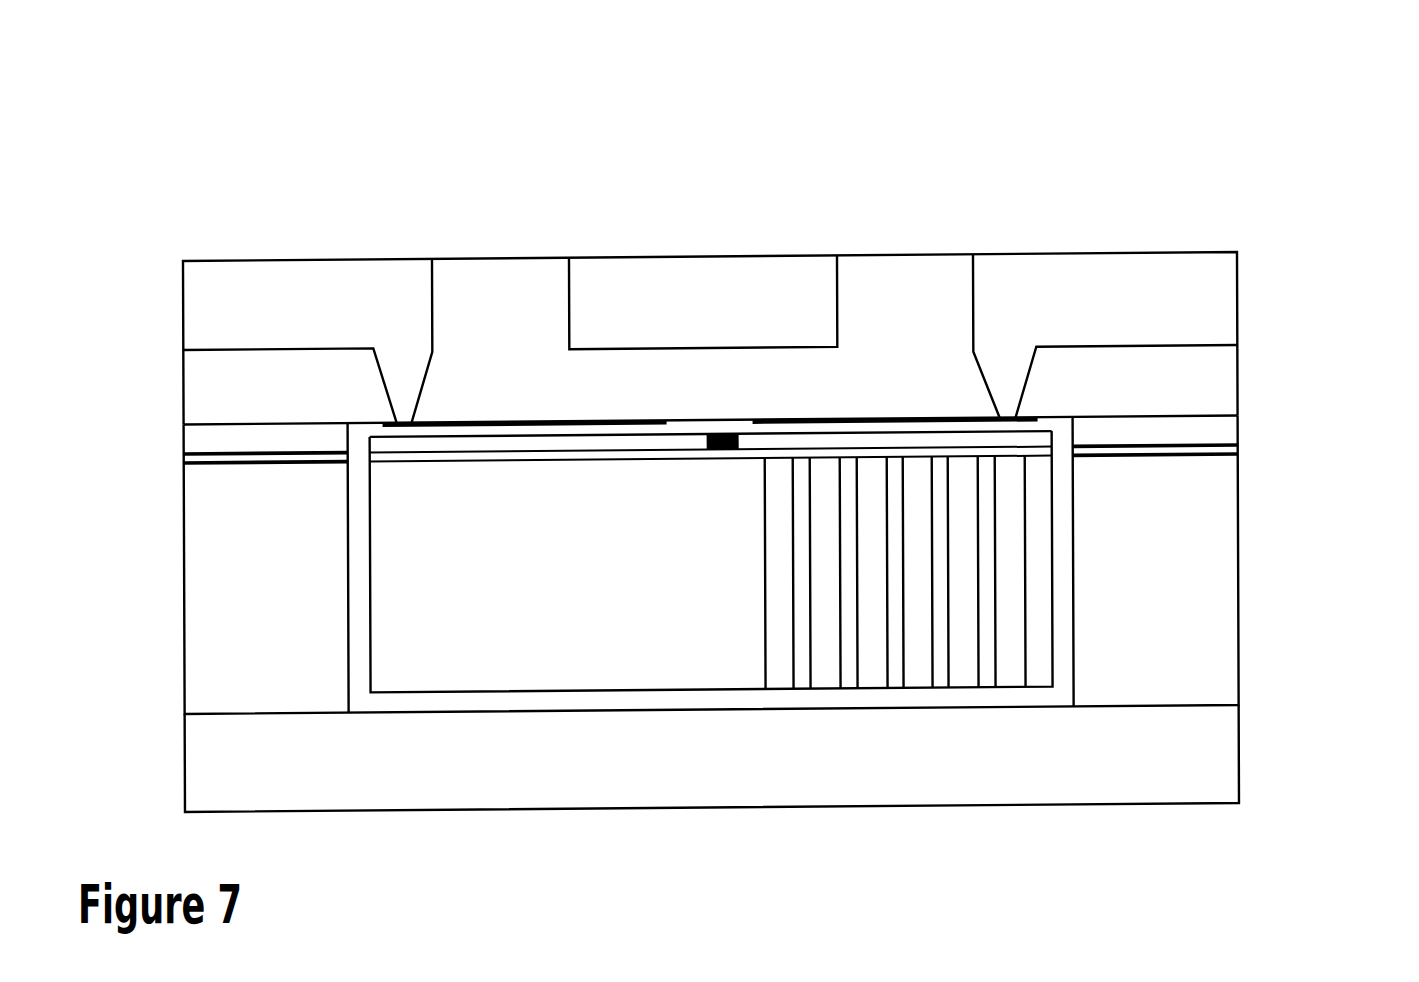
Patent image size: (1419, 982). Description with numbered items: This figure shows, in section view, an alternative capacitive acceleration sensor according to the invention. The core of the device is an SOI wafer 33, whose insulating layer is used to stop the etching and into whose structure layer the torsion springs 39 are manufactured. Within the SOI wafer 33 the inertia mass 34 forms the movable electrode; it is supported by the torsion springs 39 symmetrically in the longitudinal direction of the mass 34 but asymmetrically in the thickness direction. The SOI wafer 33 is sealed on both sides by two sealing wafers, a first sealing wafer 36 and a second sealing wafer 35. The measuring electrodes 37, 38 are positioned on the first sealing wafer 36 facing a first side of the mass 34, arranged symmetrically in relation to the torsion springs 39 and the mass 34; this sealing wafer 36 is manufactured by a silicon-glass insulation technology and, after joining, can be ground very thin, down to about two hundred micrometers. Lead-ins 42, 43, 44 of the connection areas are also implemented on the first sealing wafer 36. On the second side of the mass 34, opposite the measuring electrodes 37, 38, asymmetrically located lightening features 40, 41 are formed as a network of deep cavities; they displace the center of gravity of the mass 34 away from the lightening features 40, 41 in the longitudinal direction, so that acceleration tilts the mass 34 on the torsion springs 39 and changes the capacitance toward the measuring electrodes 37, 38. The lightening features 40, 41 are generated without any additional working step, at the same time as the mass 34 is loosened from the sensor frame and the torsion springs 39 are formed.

The SOI wafer 33 is at (1238, 502).
The inertia mass 34 is at (509, 433).
The second sealing wafer 35 is at (1238, 776).
The first sealing wafer 36 is at (1239, 370).
The measuring electrode 37 is at (613, 419).
The measuring electrode 38 is at (862, 418).
The torsion springs 39 is at (723, 433).
The lightening feature 40 is at (958, 599).
The lightening feature 41 is at (1010, 666).
The lead-in 42 is at (343, 262).
The lead-in 43 is at (1086, 257).
The lead-in 44 is at (726, 258).